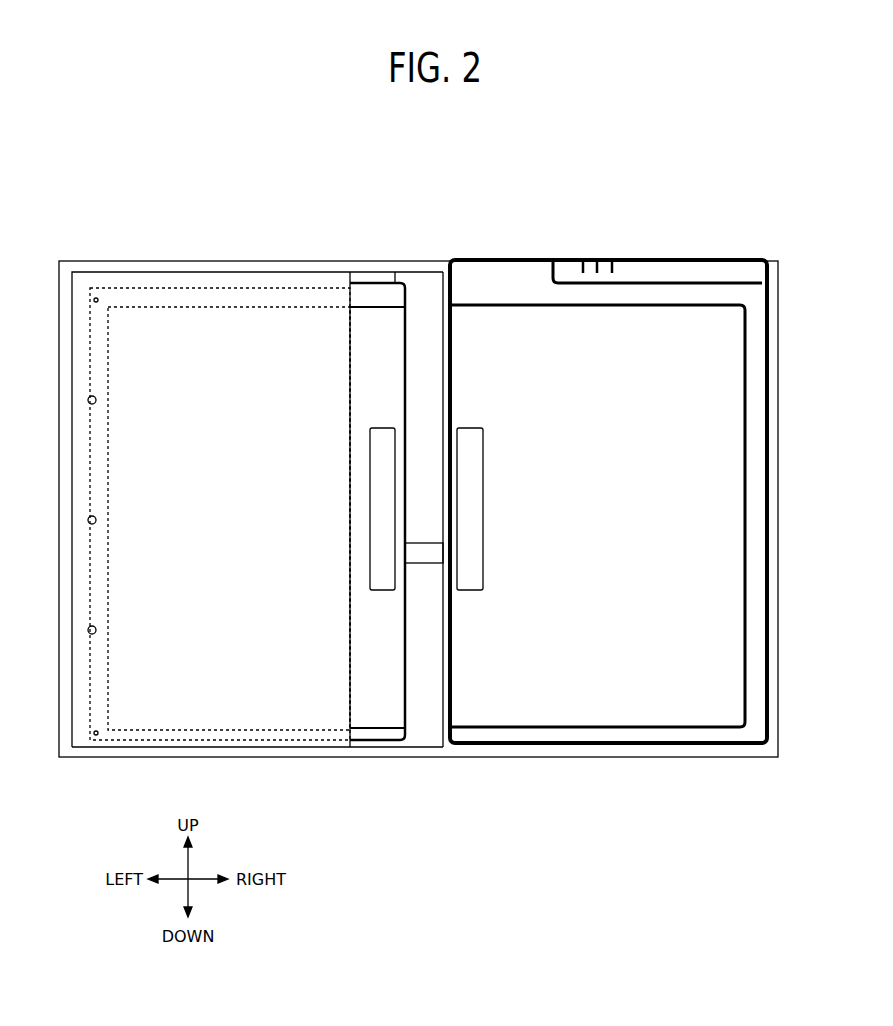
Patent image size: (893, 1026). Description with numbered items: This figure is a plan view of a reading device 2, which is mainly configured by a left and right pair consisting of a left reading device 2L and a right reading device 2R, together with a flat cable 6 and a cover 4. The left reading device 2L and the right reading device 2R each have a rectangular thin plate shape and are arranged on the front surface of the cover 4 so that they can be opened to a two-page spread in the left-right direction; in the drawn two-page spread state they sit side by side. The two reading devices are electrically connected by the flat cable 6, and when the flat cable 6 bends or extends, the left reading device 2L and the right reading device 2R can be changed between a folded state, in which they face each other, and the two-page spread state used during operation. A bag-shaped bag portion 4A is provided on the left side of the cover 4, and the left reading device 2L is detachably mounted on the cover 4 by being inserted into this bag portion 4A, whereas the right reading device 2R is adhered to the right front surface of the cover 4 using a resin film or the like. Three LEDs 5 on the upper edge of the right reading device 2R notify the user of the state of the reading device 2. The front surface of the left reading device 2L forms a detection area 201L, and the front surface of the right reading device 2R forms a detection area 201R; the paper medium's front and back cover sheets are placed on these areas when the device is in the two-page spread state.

The reading device 2 is at (748, 262).
The cover 4 is at (244, 268).
The bag portion 4A is at (140, 680).
The LEDs 5 is at (616, 258).
The flat cable 6 is at (425, 553).
The left reading device 2L is at (372, 710).
The detection area 201L is at (380, 632).
The right reading device 2R is at (600, 713).
The detection area 201R is at (685, 470).